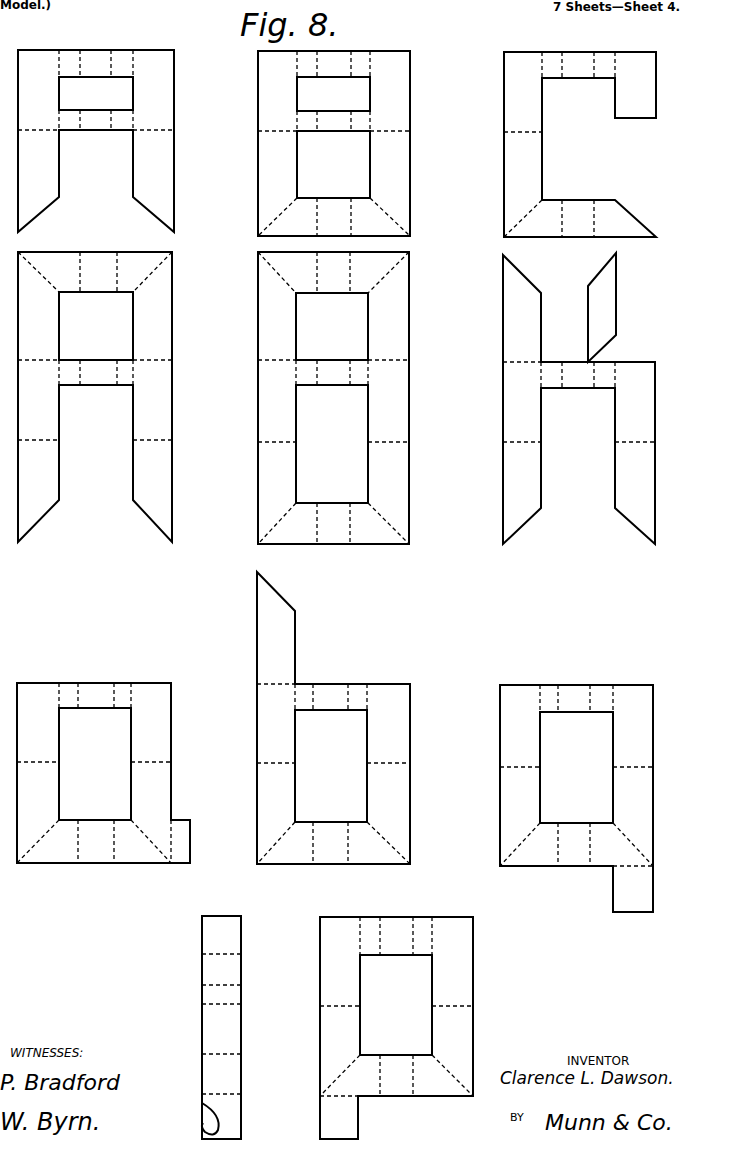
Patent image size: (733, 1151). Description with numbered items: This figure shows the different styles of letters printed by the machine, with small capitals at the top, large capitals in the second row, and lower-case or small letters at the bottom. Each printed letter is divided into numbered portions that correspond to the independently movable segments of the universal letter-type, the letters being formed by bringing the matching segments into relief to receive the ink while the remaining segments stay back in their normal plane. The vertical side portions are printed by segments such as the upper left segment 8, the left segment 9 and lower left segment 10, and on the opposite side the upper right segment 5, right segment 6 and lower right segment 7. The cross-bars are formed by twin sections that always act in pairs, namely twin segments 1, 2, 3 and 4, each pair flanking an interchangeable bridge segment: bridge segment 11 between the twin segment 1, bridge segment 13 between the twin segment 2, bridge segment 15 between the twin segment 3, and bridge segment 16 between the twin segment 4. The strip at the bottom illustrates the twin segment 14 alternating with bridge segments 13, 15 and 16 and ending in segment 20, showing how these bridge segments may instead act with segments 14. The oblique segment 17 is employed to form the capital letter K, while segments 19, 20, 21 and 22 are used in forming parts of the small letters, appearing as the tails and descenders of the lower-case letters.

The twin segment 1 is at (213, 272).
The twin segment 2 is at (337, 502).
The twin segment 3 is at (214, 120).
The twin segment 4 is at (335, 647).
The letter-segment 5 is at (271, 332).
The letter-segment 6 is at (393, 542).
The letter-segment 7 is at (395, 597).
The letter-segment 8 is at (279, 497).
The letter-segment 9 is at (279, 545).
The letter-segment 10 is at (281, 602).
The flanged shell segment 11 is at (215, 272).
The bridge segment 13 is at (336, 502).
The twin segment 14 is at (221, 1008).
The bridge segment 15 is at (215, 557).
The bridge segment 16 is at (336, 647).
The letter-segment 17 is at (602, 307).
The letter-segment 19 is at (633, 882).
The letter-segment 20 is at (217, 1119).
The letter-segment 21 is at (339, 1110).
The letter-segment 22 is at (179, 841).